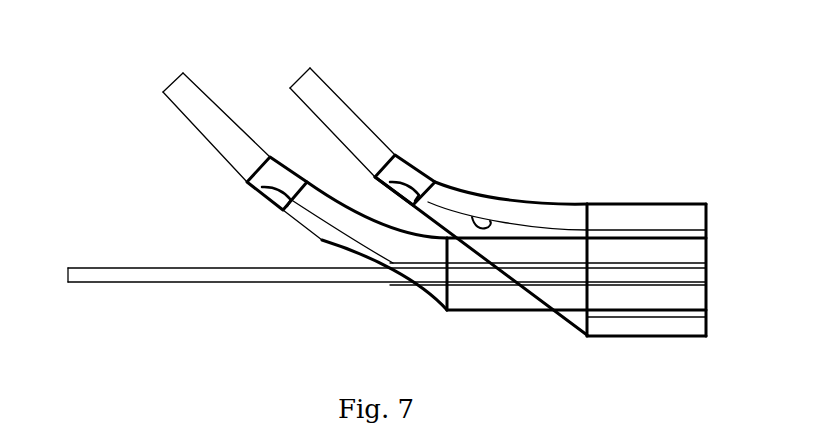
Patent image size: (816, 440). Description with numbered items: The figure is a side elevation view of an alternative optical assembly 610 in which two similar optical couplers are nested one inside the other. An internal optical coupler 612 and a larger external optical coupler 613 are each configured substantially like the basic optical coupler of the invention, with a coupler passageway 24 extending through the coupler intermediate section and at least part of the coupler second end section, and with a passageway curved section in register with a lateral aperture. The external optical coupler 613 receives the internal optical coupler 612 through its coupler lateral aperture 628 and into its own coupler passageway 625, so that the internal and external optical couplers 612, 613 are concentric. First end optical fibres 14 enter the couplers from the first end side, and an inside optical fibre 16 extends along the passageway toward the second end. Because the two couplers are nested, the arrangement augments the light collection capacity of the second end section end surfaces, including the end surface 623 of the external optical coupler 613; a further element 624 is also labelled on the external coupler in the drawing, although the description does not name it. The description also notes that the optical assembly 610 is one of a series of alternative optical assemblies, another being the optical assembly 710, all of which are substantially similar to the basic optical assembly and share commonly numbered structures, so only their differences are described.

The first end optical fibre 14 is at (183, 90).
The inside optical fibre 16 is at (115, 277).
The coupler passageway 24 is at (390, 265).
The optical assembly 610 is at (131, 180).
The internal optical coupler 612 is at (492, 312).
The external optical coupler 613 is at (593, 201).
The second end section end surface 623 is at (706, 205).
The end wall 624 is at (707, 300).
The coupler passageway 625 is at (487, 227).
The coupler lateral aperture 628 is at (560, 313).
The optical assembly 710 is at (641, 388).